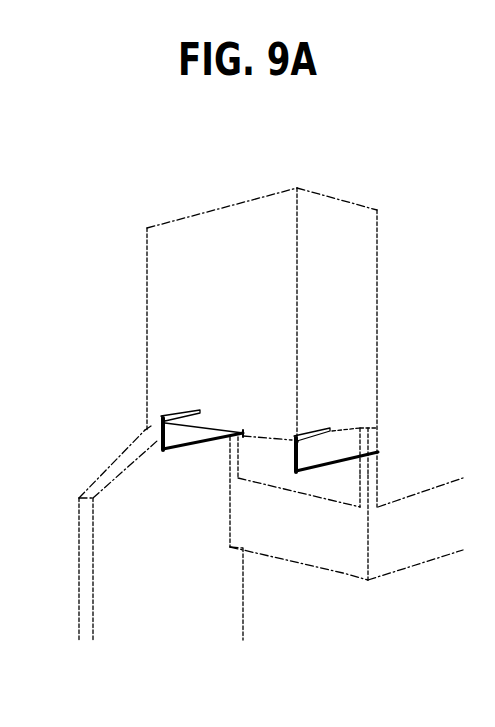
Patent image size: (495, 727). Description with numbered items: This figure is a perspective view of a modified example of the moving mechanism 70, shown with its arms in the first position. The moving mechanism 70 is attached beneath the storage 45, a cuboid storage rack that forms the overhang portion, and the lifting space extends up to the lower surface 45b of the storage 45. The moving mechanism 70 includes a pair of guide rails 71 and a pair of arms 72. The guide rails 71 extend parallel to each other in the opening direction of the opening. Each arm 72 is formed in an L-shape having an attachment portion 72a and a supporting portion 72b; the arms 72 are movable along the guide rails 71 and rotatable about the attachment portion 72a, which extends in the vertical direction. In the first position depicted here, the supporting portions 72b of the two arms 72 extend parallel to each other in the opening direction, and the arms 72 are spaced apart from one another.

The storage 45 is at (195, 215).
The lower surface of the storage 45b is at (272, 440).
The moving mechanism 70 is at (178, 453).
The guide rails 71 is at (196, 412).
The arms 72 is at (206, 453).
The attachment portion 72a is at (143, 432).
The supporting portion 72b is at (218, 423).